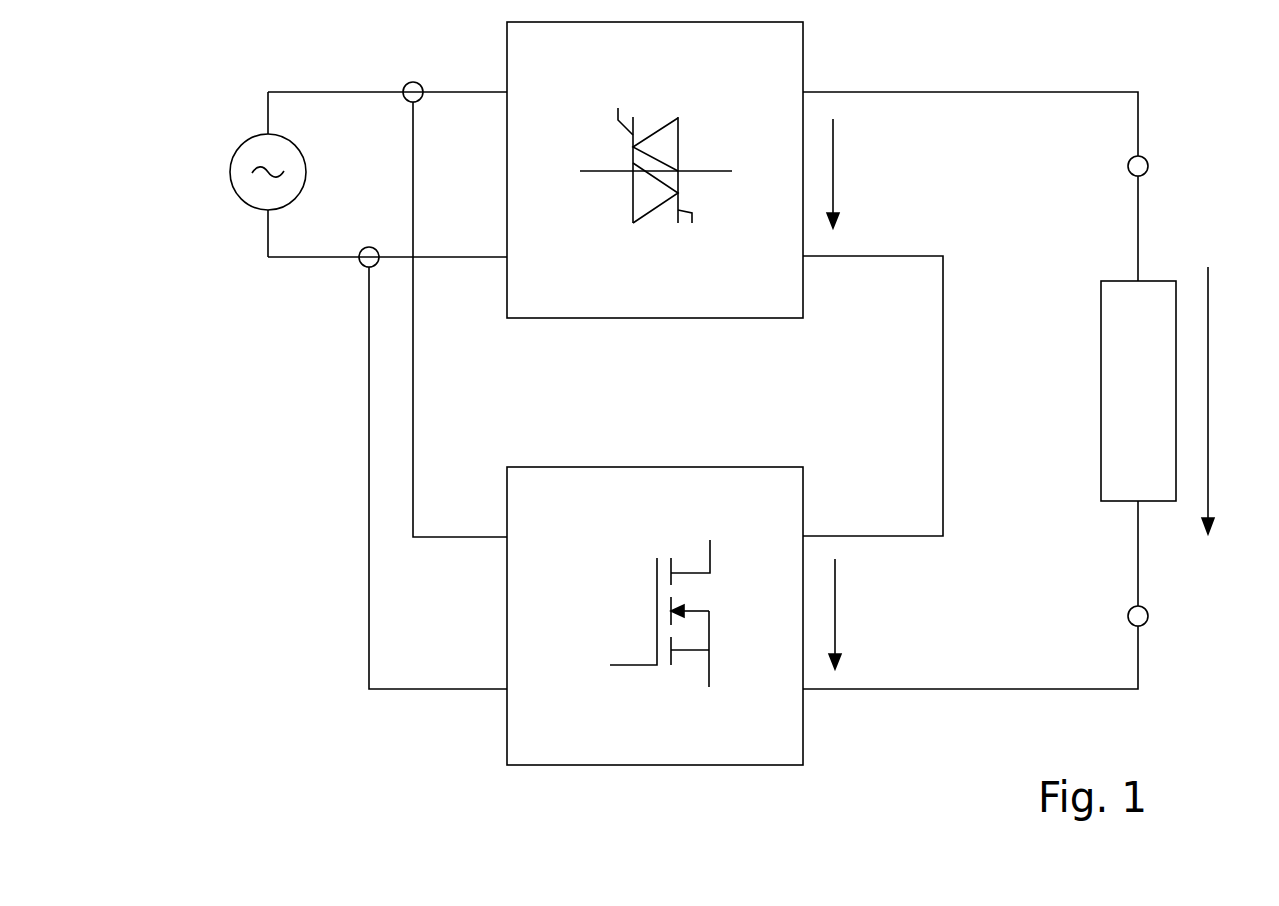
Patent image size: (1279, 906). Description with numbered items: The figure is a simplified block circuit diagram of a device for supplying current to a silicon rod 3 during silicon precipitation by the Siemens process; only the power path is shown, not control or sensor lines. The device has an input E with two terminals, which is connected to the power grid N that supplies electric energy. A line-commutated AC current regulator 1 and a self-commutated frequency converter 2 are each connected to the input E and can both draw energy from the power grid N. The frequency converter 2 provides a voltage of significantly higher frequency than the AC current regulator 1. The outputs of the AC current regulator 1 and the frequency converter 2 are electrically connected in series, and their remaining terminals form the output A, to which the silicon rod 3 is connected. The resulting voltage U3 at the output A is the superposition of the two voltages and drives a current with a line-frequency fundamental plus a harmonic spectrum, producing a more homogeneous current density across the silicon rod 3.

The AC current regulator 1 is at (778, 50).
The frequency converter 2 is at (780, 743).
The silicon rod 3 is at (1160, 281).
The power grid N is at (230, 173).
The input E is at (407, 84).
The output A is at (1148, 164).
The voltage U3 is at (1224, 400).